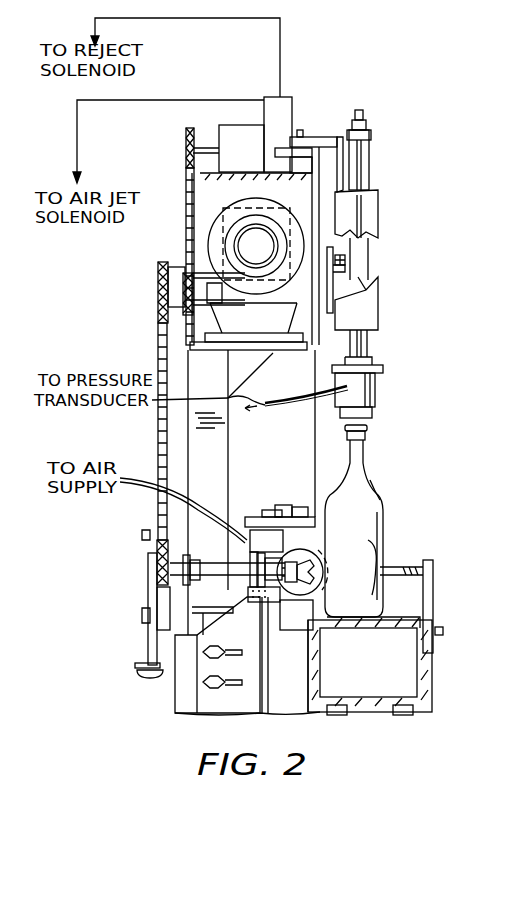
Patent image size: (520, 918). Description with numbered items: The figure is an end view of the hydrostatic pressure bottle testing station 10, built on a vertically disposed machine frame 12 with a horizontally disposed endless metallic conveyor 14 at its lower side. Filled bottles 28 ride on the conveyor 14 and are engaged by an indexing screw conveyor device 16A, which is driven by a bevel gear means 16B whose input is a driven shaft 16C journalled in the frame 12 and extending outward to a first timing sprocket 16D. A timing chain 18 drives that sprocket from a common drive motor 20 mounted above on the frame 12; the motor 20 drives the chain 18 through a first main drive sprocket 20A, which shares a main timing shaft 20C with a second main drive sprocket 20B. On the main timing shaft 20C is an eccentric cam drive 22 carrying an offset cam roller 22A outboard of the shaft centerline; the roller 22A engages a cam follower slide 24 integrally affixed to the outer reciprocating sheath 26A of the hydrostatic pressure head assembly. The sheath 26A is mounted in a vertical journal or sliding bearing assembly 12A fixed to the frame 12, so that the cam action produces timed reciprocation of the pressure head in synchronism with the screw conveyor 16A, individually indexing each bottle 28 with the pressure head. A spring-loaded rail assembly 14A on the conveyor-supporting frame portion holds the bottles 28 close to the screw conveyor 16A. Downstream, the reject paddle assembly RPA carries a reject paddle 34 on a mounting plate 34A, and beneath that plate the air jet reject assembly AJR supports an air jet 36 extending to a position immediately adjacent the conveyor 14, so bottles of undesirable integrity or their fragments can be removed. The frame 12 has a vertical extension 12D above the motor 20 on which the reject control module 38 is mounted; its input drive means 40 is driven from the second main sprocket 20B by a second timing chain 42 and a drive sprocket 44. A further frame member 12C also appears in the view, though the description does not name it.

The hydrostatic pressure bottle testing station 10 is at (117, 351).
The machine frame 12 is at (218, 480).
The vertical journal or sliding bearing assembly 12A is at (370, 305).
The bracket 12C is at (322, 137).
The vertical extension 12D is at (315, 168).
The endless metallic conveyor 14 is at (380, 626).
The spring-loaded rail assembly 14A is at (442, 570).
The indexing screw conveyor device 16A is at (300, 630).
The bevel gear means 16B is at (325, 575).
The driven shaft 16C is at (238, 572).
The first timing sprocket 16D is at (148, 560).
The timing chain 18 is at (158, 447).
The common drive motor 20 is at (253, 232).
The first main drive sprocket 20A is at (158, 290).
The second main drive sprocket 20B is at (185, 272).
The main timing shaft 20C is at (297, 287).
The eccentric cam drive 22 is at (343, 231).
The offset cam roller 22A is at (345, 260).
The cam follower slide 24 is at (340, 282).
The outer reciprocating sheath 26A is at (360, 342).
The bottles 28 is at (362, 513).
The reject paddle 34 is at (315, 503).
The mounting plate 34A is at (270, 508).
The air jet 36 is at (360, 561).
The reject control module 38 is at (289, 129).
The input drive means 40 is at (250, 157).
The second timing chain 42 is at (186, 184).
The drive sprocket 44 is at (188, 138).
The reject paddle assembly RPA is at (291, 498).
The air jet reject assembly AJR is at (258, 603).